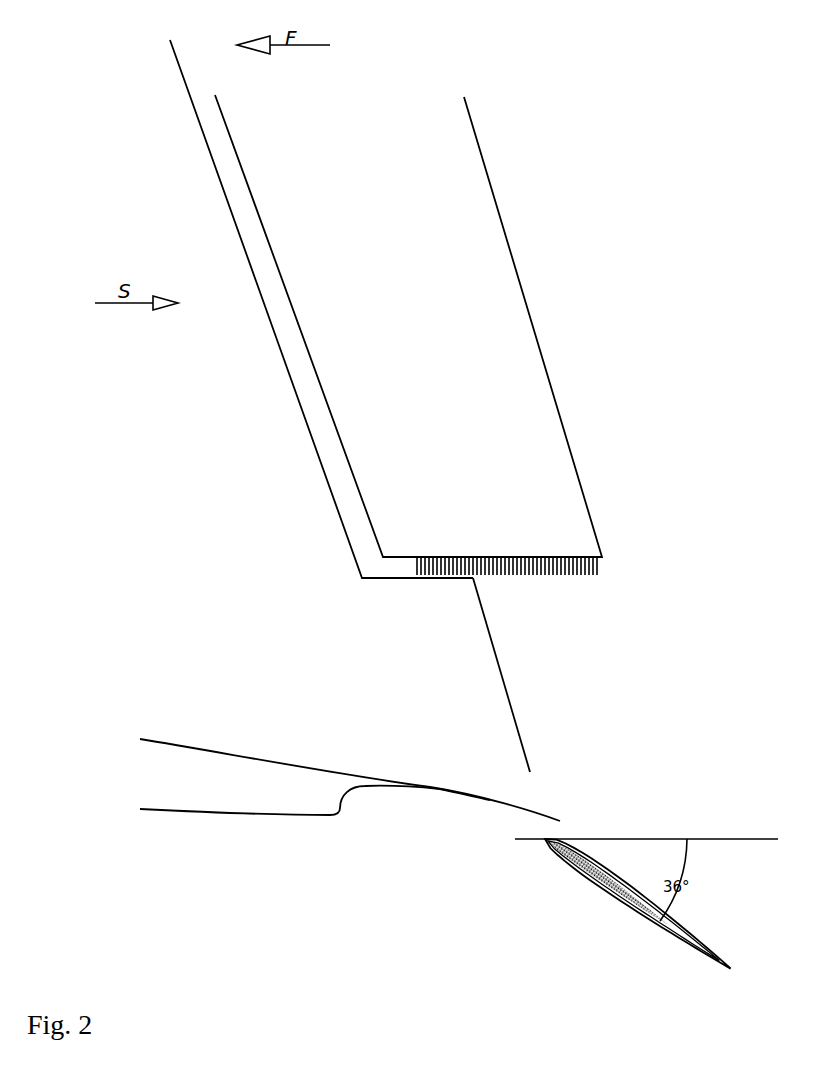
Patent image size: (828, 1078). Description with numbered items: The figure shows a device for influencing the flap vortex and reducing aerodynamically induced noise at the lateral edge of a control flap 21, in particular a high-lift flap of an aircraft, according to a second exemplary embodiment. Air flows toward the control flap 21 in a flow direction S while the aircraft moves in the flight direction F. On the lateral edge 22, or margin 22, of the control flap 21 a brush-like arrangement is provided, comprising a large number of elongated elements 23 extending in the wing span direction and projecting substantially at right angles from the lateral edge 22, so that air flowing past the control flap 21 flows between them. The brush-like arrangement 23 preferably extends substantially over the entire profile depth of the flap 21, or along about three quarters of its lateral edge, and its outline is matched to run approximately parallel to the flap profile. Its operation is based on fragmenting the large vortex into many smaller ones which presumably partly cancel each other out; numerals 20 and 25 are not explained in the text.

The wing 20 is at (176, 448).
The control flap 21 is at (396, 294).
The lateral edge 22 is at (490, 578).
The elongated elements 23 is at (597, 565).
The section line 25 is at (497, 658).